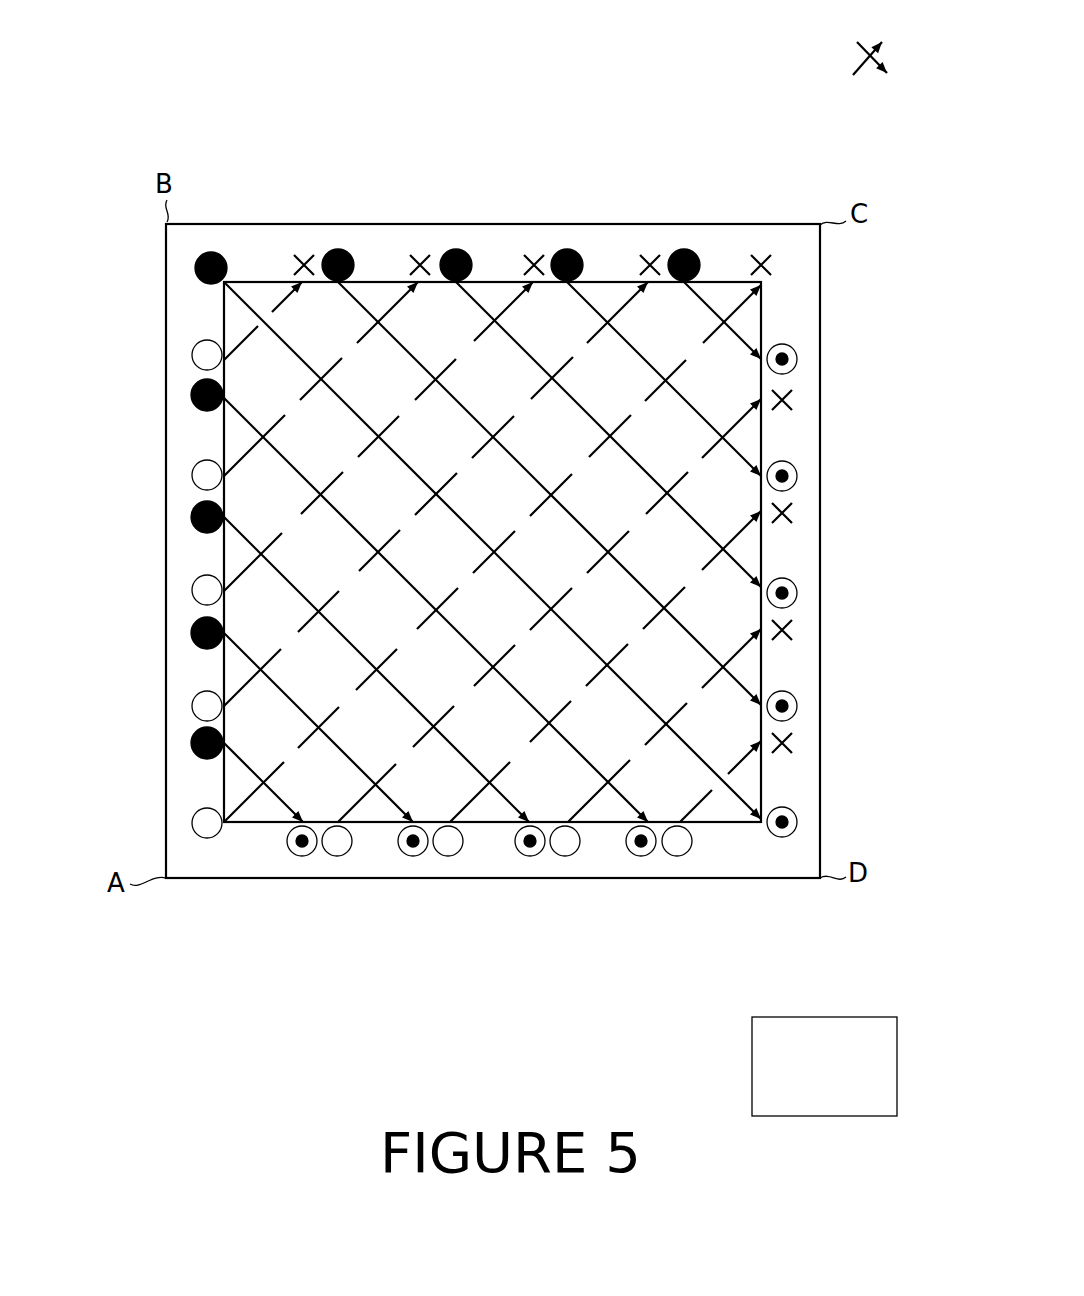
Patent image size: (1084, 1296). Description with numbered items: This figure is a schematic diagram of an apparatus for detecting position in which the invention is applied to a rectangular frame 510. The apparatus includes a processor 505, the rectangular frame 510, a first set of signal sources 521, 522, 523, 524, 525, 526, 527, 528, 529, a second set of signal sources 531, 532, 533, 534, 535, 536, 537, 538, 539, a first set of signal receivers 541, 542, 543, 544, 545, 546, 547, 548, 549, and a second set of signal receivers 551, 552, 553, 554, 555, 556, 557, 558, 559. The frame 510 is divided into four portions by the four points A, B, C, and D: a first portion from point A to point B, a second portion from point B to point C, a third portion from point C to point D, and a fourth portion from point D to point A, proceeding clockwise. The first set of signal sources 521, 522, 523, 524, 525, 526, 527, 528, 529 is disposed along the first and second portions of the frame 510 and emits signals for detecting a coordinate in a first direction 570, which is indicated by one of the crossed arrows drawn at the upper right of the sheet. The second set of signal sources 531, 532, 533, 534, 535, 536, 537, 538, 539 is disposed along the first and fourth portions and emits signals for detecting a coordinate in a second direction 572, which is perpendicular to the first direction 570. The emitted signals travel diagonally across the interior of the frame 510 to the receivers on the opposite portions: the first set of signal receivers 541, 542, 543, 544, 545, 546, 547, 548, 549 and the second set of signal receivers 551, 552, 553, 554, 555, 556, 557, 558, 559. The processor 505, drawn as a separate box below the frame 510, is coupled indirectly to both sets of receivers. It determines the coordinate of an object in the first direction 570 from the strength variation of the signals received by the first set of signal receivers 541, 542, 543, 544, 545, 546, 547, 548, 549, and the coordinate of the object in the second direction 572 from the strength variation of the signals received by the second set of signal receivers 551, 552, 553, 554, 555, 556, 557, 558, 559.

The processor 505 is at (800, 1116).
The rectangular frame 510 is at (812, 292).
The signal source 521 is at (190, 746).
The signal source 522 is at (190, 634).
The signal source 523 is at (190, 518).
The signal source 524 is at (190, 396).
The signal source 525 is at (212, 253).
The signal source 526 is at (340, 250).
The signal source 527 is at (458, 250).
The signal source 528 is at (572, 250).
The signal source 529 is at (687, 250).
The signal source 531 is at (192, 354).
The signal source 532 is at (190, 475).
The signal source 533 is at (190, 590).
The signal source 534 is at (190, 706).
The signal source 535 is at (190, 823).
The signal source 536 is at (333, 856).
The signal source 537 is at (446, 857).
The signal source 538 is at (562, 857).
The signal source 539 is at (690, 858).
The signal receiver 541 is at (290, 854).
The signal receiver 542 is at (405, 856).
The signal receiver 543 is at (525, 856).
The signal receiver 544 is at (643, 858).
The signal receiver 545 is at (797, 822).
The signal receiver 546 is at (797, 707).
The signal receiver 547 is at (797, 593).
The signal receiver 548 is at (797, 476).
The signal receiver 549 is at (797, 357).
The signal receiver 551 is at (304, 252).
The signal receiver 552 is at (420, 252).
The signal receiver 553 is at (534, 252).
The signal receiver 554 is at (650, 252).
The signal receiver 555 is at (763, 252).
The signal receiver 556 is at (797, 398).
The signal receiver 557 is at (797, 514).
The signal receiver 558 is at (797, 630).
The signal receiver 559 is at (797, 744).
The first direction 570 is at (892, 43).
The second direction 572 is at (897, 68).